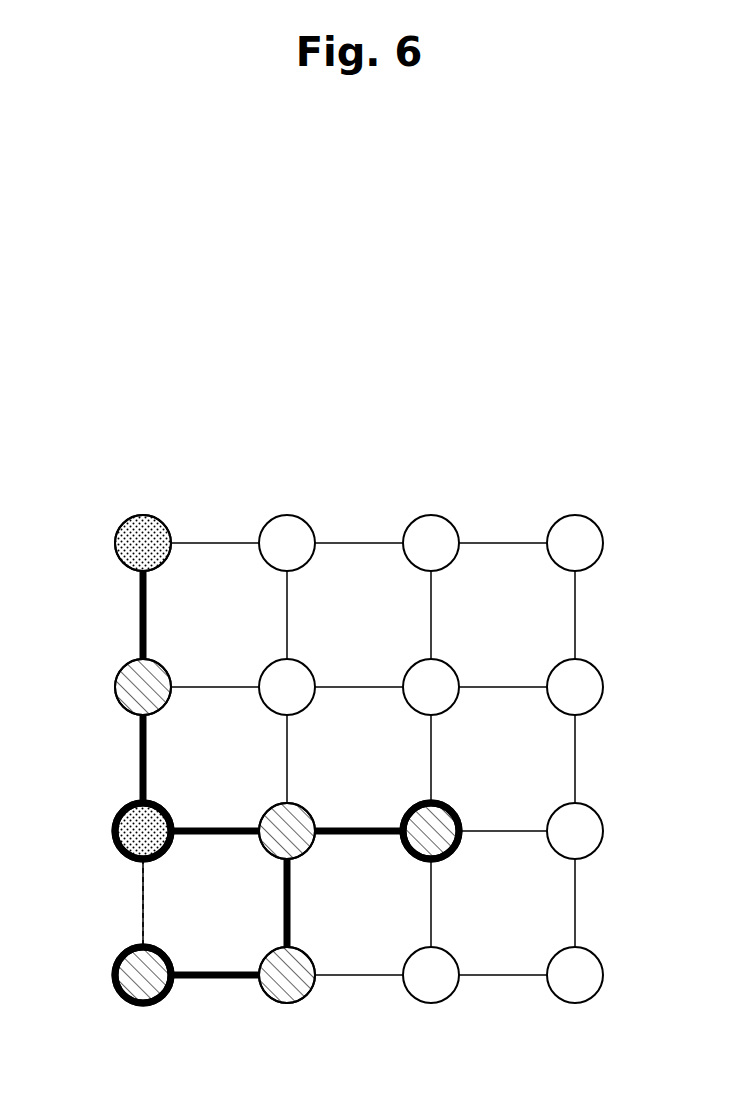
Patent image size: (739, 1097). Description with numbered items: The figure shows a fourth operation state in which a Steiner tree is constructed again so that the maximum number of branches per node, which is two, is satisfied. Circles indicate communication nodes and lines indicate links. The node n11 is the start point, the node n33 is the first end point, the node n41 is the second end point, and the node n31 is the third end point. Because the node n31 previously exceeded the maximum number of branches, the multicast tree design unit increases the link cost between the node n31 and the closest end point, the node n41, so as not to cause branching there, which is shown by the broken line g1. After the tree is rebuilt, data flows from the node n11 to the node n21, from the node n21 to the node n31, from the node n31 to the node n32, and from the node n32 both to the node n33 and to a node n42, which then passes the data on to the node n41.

The node n11 is at (145, 514).
The node n21 is at (160, 658).
The node n31 is at (162, 800).
The node n32 is at (303, 803).
The node n33 is at (450, 800).
The node n41 is at (162, 944).
The node n42 is at (303, 947).
The broken line g1 is at (140, 896).